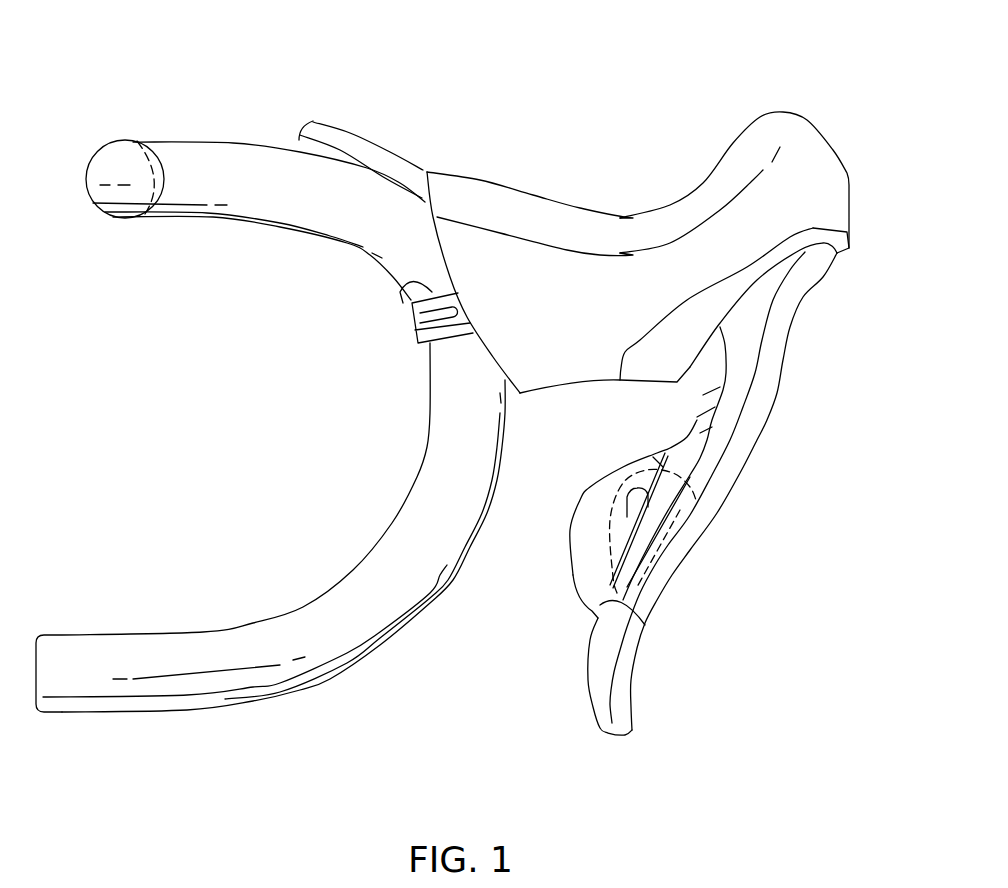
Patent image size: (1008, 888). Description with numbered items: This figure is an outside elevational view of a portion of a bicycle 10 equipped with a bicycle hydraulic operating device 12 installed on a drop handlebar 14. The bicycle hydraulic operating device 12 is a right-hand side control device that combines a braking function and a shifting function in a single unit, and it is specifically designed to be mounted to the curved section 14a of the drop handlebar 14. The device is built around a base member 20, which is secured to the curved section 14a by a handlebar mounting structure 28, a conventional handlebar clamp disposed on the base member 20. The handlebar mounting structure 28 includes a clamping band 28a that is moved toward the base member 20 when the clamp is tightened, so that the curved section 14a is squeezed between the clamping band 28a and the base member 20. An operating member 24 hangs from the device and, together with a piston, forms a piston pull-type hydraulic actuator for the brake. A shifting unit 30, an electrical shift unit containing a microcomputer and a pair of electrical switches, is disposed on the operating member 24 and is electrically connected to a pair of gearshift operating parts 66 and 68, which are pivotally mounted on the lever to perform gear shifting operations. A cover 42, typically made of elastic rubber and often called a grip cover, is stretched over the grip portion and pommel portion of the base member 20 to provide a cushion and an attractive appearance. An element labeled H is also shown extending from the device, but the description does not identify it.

The bicycle 10 is at (111, 125).
The bicycle hydraulic operating device 12 is at (790, 84).
The drop handlebar 14 is at (223, 135).
The curved section 14a is at (428, 377).
The hydraulic hose H is at (373, 130).
The base member 20 is at (641, 390).
The operating member 24 is at (746, 475).
The handlebar mounting structure 28 is at (396, 316).
The clamping band 28a is at (400, 284).
The shifting unit 30 is at (699, 523).
The cover 42 is at (530, 217).
The gearshift operating part 66 is at (643, 623).
The gearshift operating part 68 is at (573, 577).